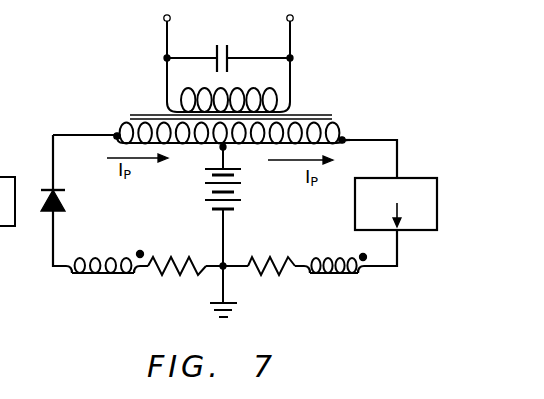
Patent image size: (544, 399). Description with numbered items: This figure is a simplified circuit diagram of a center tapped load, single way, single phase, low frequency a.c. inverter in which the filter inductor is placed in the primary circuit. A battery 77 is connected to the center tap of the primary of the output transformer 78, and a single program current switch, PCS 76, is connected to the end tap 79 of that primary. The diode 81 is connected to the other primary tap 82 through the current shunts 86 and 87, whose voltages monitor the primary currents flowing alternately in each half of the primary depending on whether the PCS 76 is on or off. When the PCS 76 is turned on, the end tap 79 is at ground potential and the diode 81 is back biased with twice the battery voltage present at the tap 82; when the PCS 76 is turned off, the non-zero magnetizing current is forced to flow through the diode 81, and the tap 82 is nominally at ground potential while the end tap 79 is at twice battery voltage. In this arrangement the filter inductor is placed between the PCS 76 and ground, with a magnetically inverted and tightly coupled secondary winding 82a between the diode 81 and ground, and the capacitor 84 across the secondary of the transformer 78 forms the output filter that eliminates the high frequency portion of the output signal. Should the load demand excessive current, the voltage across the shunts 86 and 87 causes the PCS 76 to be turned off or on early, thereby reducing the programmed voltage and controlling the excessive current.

The program current switch 76 is at (412, 178).
The battery 77 is at (241, 194).
The output transformer 78 is at (300, 108).
The end tap 79 is at (348, 137).
The diode 81 is at (42, 197).
The primary tap 82 is at (117, 135).
The secondary feedback winding 82a is at (85, 274).
The capacitor 84 is at (225, 44).
The current shunt 86 is at (180, 253).
The current shunt 87 is at (265, 256).